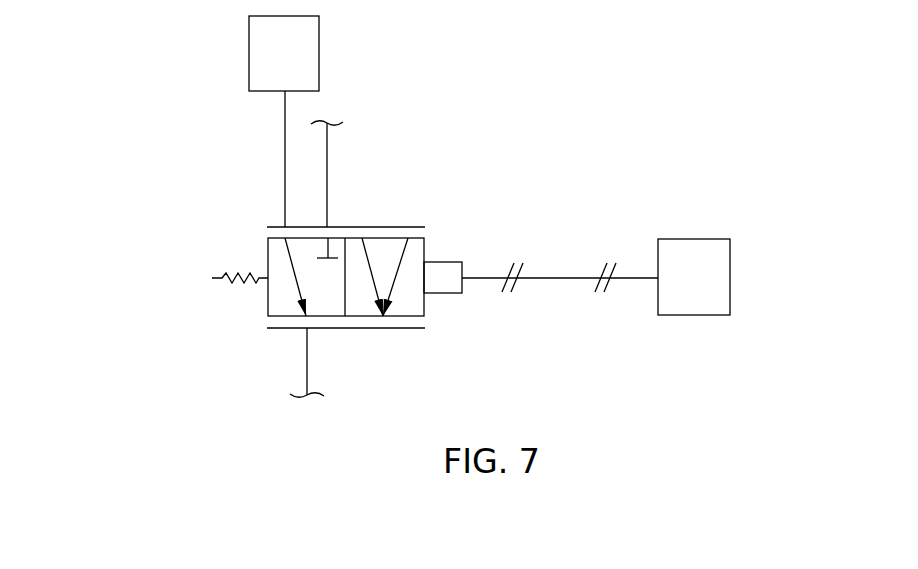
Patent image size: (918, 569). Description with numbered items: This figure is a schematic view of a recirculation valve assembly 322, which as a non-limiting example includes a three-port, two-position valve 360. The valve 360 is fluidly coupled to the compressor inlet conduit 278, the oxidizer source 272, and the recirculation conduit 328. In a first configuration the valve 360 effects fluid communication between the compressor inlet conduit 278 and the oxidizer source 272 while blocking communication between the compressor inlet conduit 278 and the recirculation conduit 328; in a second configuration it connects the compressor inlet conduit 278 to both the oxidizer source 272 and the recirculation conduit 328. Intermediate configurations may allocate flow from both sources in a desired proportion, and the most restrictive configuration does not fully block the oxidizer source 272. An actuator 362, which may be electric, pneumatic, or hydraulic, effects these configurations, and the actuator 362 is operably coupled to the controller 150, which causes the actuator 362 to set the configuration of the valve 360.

The recirculation valve assembly 322 is at (605, 124).
The oxidizer source 272 is at (300, 62).
The recirculation conduit 328 is at (327, 152).
The valve 360 is at (418, 201).
The actuator 362 is at (442, 293).
The compressor inlet conduit 278 is at (307, 368).
The controller 150 is at (708, 285).